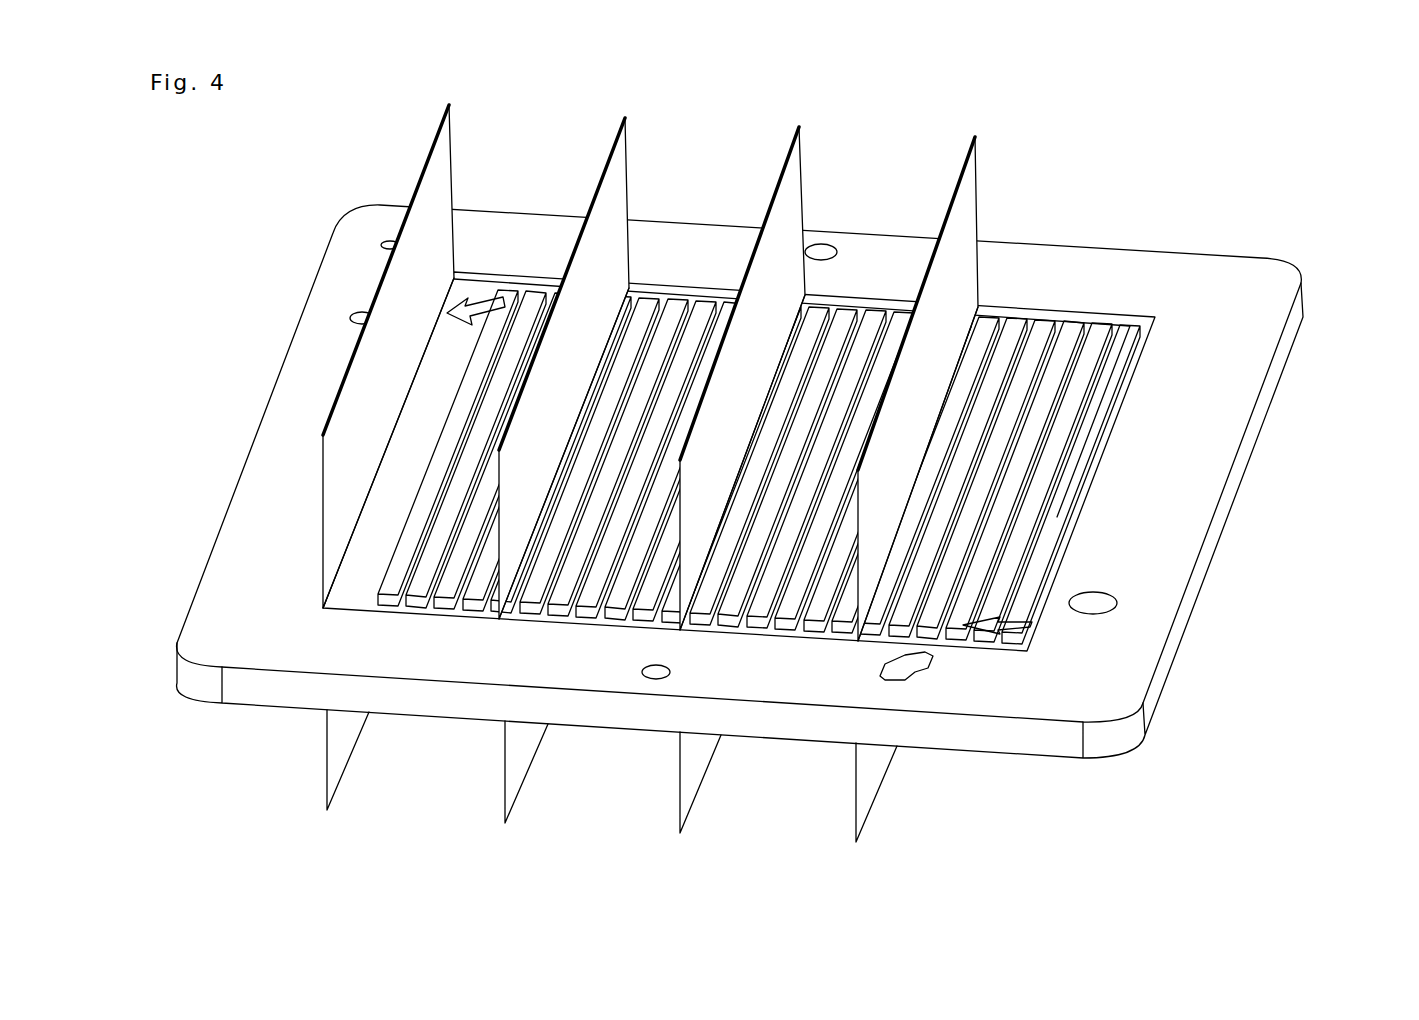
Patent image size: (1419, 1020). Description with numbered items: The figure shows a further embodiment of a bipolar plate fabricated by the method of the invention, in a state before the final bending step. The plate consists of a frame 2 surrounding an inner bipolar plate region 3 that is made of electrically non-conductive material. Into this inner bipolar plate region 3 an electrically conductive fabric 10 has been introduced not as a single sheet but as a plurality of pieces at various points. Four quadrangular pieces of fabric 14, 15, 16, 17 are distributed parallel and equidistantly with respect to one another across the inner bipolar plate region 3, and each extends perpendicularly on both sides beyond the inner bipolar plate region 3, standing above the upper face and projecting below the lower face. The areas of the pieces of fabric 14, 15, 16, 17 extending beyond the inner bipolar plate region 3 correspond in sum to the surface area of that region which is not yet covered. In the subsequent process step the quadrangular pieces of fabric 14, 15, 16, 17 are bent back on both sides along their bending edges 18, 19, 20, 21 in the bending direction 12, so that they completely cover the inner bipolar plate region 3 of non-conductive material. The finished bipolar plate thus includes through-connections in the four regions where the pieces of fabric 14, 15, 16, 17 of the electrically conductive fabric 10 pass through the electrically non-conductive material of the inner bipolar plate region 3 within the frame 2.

The frame 2 is at (1160, 468).
The inner bipolar plate region 3 is at (993, 446).
The electrically conductive fabric 10 is at (545, 346).
The bending direction 12 is at (428, 748).
The quadrangular piece of fabric 14 is at (283, 356).
The quadrangular piece of fabric 15 is at (370, 368).
The quadrangular piece of fabric 16 is at (458, 378).
The quadrangular piece of fabric 17 is at (545, 389).
The bending edge 18 is at (375, 438).
The bending edge 19 is at (555, 430).
The bending edge 20 is at (724, 448).
The bending edge 21 is at (904, 458).